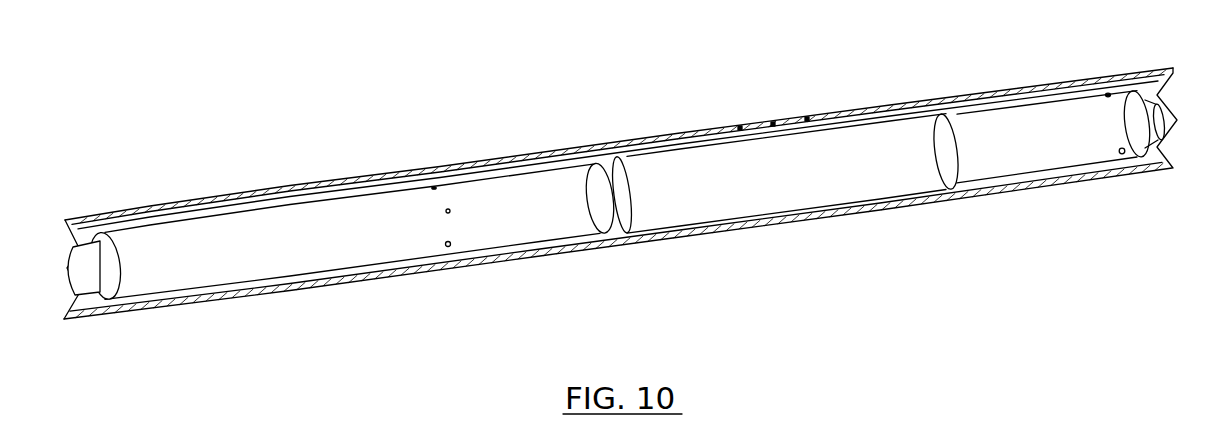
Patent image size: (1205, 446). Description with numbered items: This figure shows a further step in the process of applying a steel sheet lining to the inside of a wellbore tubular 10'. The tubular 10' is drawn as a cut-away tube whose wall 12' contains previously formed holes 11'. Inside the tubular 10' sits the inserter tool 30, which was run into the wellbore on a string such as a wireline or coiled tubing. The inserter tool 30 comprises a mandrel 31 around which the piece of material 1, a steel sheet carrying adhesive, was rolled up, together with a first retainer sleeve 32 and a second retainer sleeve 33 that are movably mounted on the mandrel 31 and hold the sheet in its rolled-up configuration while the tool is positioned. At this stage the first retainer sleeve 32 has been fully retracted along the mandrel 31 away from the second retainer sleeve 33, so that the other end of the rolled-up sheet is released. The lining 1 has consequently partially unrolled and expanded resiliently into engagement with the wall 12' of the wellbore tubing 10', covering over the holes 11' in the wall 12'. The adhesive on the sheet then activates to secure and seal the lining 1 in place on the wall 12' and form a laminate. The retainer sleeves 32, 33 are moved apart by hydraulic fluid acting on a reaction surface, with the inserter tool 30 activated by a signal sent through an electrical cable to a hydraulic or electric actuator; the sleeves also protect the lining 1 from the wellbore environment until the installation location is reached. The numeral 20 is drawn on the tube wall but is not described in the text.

The piece of material 1 is at (908, 127).
The wellbore tubular 10' is at (619, 146).
The holes 11' is at (771, 90).
The wall 12' is at (618, 152).
The pipe wall 20 is at (1055, 84).
The inserter tool 30 is at (617, 195).
The mandrel 31 is at (615, 237).
The first retainer sleeve 32 is at (255, 252).
The second retainer sleeve 33 is at (1040, 155).